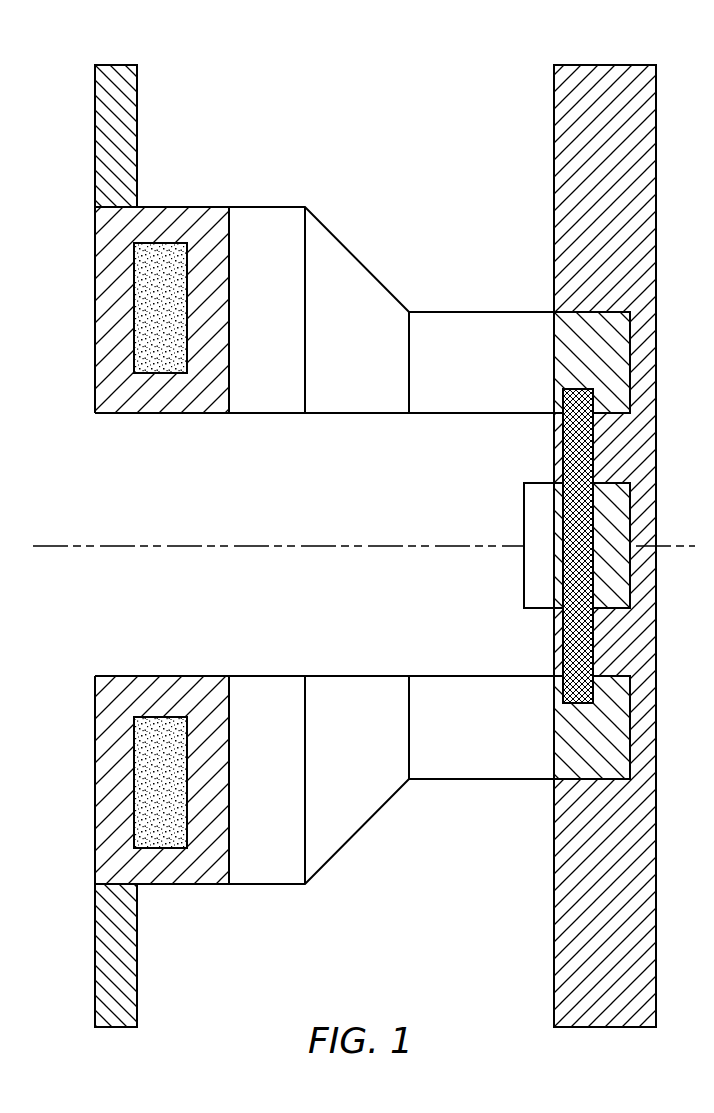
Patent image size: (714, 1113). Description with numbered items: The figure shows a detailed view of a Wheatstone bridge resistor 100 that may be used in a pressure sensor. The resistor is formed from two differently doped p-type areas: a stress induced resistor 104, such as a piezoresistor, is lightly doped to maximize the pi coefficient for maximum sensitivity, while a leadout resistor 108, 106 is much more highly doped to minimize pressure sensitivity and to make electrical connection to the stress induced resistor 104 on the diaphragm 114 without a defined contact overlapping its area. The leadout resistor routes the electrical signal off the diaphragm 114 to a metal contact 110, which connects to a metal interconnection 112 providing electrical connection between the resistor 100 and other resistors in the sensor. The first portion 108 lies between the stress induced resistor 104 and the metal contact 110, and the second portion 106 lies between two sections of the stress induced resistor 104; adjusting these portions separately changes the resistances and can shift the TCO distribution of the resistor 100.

The Wheatstone bridge resistor 100 is at (383, 40).
The stress induced resistor 104 is at (566, 436).
The second portion of the leadout resistor 106 is at (524, 513).
The first portion of the leadout resistor 108 is at (358, 288).
The metal contact 110 is at (142, 293).
The metal interconnection 112 is at (110, 133).
The diaphragm 114 is at (554, 163).